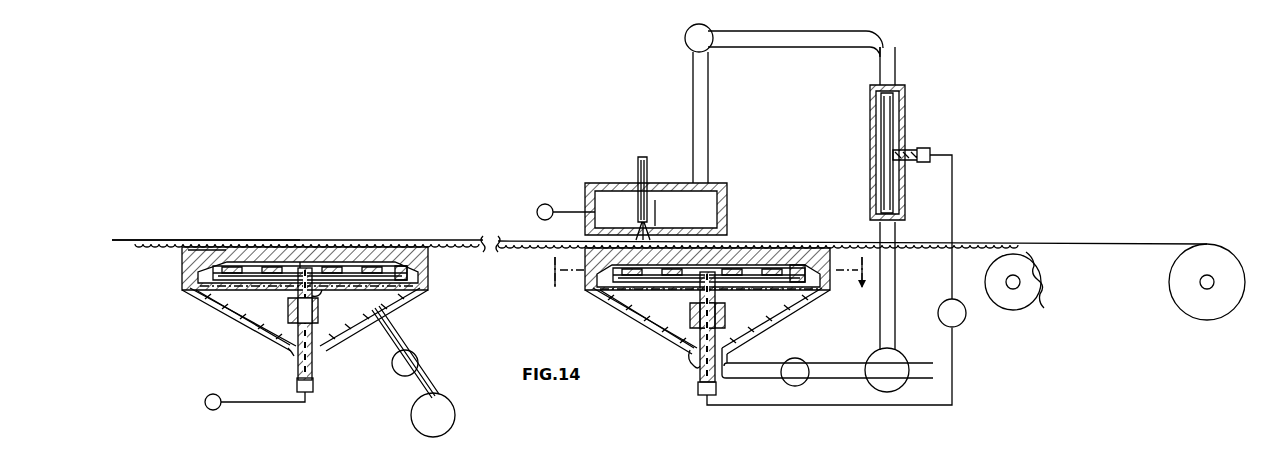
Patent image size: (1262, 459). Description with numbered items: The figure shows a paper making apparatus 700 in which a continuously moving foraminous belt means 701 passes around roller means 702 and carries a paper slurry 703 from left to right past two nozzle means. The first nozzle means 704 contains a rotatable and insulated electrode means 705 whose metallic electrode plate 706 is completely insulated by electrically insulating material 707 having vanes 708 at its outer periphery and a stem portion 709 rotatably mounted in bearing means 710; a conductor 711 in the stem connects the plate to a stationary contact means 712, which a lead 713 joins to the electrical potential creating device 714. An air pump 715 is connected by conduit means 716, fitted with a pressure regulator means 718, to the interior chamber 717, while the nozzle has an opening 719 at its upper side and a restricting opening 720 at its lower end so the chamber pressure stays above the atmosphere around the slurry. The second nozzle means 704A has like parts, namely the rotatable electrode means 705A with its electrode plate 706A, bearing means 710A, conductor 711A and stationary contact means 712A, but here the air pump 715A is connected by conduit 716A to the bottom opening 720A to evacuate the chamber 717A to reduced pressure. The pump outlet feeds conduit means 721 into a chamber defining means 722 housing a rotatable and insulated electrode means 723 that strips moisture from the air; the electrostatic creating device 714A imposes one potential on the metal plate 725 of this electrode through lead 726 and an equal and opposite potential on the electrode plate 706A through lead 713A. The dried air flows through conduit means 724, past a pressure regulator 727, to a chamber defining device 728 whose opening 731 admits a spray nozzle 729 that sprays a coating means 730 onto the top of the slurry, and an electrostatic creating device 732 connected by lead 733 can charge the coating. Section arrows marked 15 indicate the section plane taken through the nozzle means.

The paper making apparatus 700 is at (312, 112).
The foraminous belt means 701 is at (150, 243).
The roller means 702 is at (1032, 276).
The paper slurry 703 is at (133, 240).
The nozzle means 704 is at (405, 303).
The nozzle means 704A is at (798, 307).
The rotatable and insulated electrode means 705 is at (339, 266).
The rotatable electrode means 705A is at (743, 266).
The metallic electrode plate 706 is at (275, 262).
The electrode plate 706A is at (760, 266).
The electrically insulating material 707 is at (312, 264).
The vanes 708 is at (404, 268).
The stem portion 709 is at (318, 292).
The bearing means 710 is at (318, 318).
The bearing means 710A is at (707, 315).
The conductor 711 is at (310, 365).
The conductor 711A is at (707, 327).
The stationary contact means 712 is at (314, 386).
The stationary contact means 712A is at (707, 388).
The lead 713 is at (258, 402).
The lead 713A is at (880, 405).
The electrical potential creating device 714 is at (205, 400).
The electrostatic creating device 714A is at (964, 324).
The air pump 715 is at (455, 414).
The air pump 715A is at (882, 376).
The conduit means 716 is at (429, 383).
The conduit 716A is at (834, 366).
The interior chamber 717 is at (250, 294).
The chamber 717A is at (662, 298).
The pressure regulator means 718 is at (417, 362).
The opening 719 is at (240, 246).
The restricting opening 720 is at (291, 352).
The opening 720A is at (688, 352).
The conduit means 721 is at (890, 294).
The chamber defining means 722 is at (870, 126).
The rotatable and insulated electrode means 723 is at (900, 113).
The conduit means 724 is at (790, 32).
The metal plate 725 is at (894, 146).
The lead 726 is at (953, 196).
The pressure regulator 727 is at (684, 38).
The chamber defining device 728 is at (618, 192).
The spray nozzle 729 is at (636, 162).
The coating means 730 is at (818, 248).
The opening 731 is at (654, 228).
The electrostatic creating device 732 is at (544, 204).
The lead 733 is at (570, 212).
The section line 15 is at (710, 285).